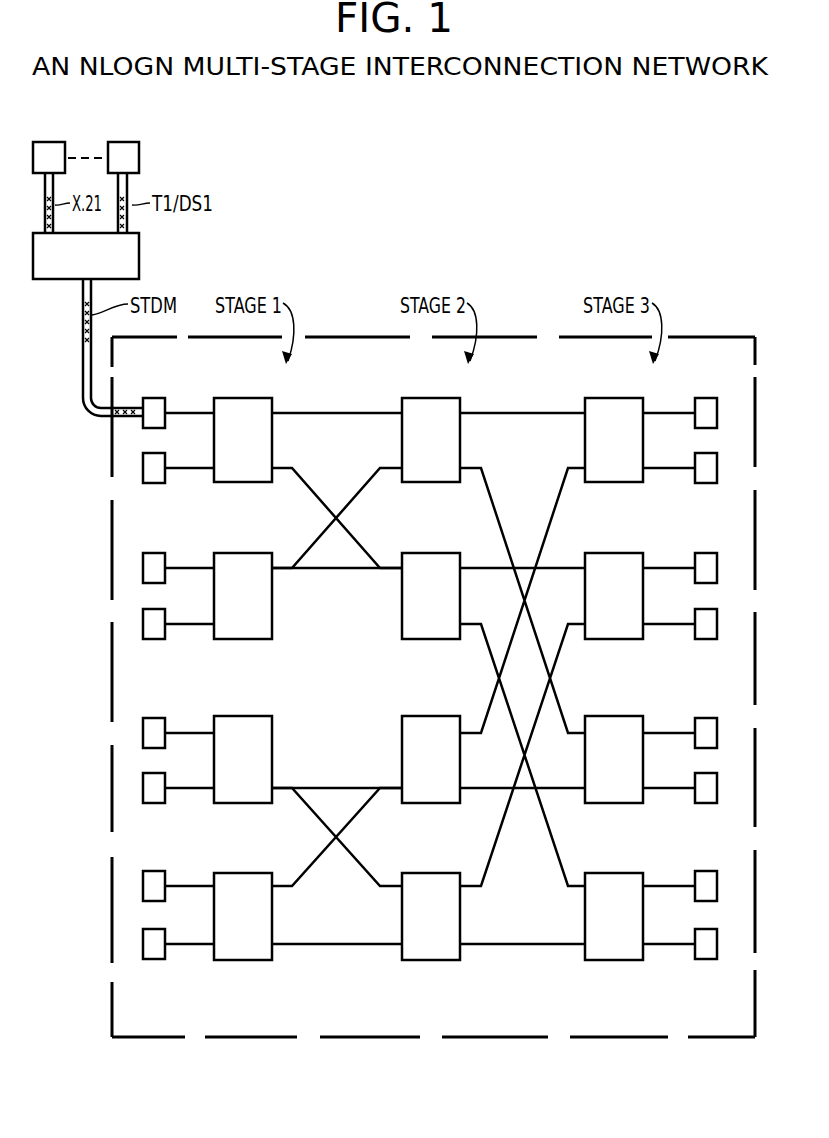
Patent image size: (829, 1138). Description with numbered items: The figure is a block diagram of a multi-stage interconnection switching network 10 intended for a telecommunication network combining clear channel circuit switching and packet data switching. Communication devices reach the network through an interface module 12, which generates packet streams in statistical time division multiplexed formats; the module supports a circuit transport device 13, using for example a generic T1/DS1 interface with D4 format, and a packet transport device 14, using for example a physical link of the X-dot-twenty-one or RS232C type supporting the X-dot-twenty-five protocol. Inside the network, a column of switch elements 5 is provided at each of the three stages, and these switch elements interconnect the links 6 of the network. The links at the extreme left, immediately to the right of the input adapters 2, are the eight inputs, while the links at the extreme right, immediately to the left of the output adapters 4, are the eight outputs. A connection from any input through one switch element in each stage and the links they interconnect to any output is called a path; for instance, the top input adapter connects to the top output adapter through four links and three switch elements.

The input adapter 2 is at (153, 398).
The output adapter 4 is at (707, 398).
The switch element 5 is at (613, 398).
The link 6 is at (673, 413).
The multi-stage interconnection switching network 10 is at (710, 331).
The interface module 12 is at (140, 257).
The circuit transport device 13 is at (124, 142).
The packet transport device 14 is at (49, 142).